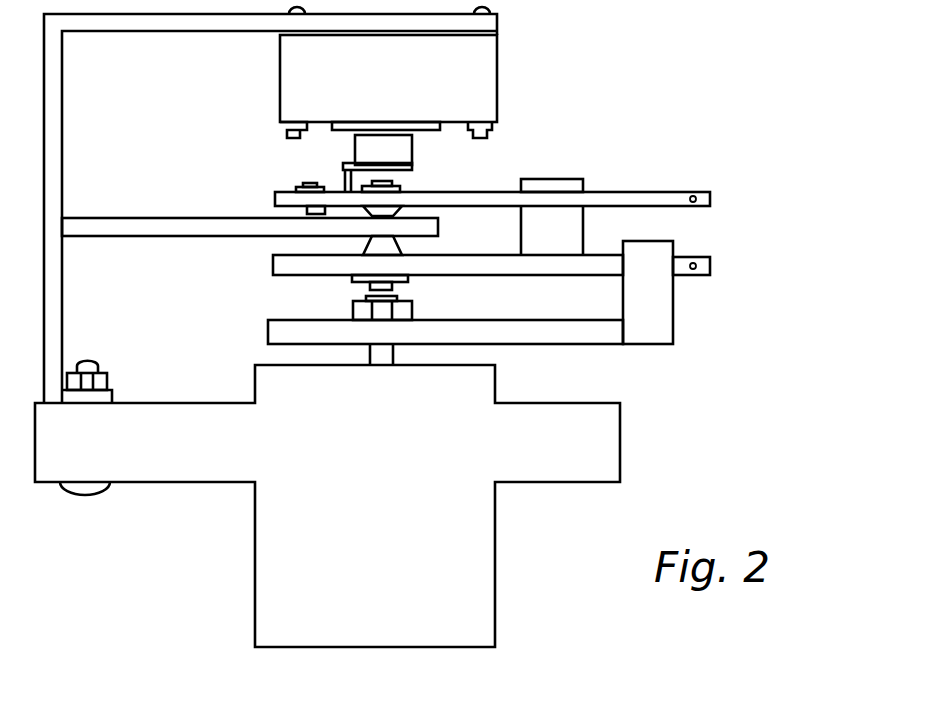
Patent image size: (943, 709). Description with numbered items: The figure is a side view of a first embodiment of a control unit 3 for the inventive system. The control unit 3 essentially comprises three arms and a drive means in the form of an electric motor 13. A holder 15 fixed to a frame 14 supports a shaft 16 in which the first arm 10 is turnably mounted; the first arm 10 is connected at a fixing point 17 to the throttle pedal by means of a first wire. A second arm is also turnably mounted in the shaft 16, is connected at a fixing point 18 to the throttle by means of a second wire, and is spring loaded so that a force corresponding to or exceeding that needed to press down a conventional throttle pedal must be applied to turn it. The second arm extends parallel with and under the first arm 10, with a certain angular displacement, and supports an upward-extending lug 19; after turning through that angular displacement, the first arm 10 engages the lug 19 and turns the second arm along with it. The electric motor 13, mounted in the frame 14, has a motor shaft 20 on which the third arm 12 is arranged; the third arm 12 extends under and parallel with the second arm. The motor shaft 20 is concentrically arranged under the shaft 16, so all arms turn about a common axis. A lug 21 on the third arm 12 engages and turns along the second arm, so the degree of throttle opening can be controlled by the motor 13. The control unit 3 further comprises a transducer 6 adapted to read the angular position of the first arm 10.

The control unit 3 is at (443, 327).
The transducer 6 is at (477, 80).
The first arm 10 is at (630, 196).
The third arm 12 is at (590, 334).
The electric motor 13 is at (458, 578).
The frame 14 is at (57, 126).
The holder 15 is at (138, 229).
The shaft 16 is at (385, 246).
The fixing point 17 is at (712, 194).
The fixing point 18 is at (700, 258).
The lug 19 is at (545, 229).
The motor shaft 20 is at (385, 345).
The lug 21 is at (660, 322).